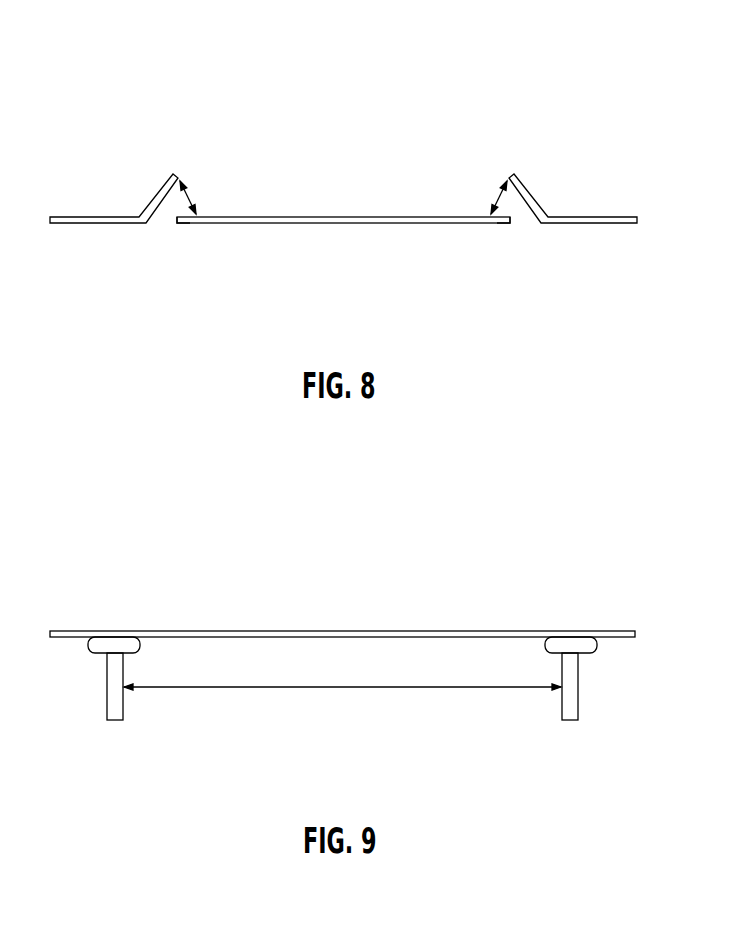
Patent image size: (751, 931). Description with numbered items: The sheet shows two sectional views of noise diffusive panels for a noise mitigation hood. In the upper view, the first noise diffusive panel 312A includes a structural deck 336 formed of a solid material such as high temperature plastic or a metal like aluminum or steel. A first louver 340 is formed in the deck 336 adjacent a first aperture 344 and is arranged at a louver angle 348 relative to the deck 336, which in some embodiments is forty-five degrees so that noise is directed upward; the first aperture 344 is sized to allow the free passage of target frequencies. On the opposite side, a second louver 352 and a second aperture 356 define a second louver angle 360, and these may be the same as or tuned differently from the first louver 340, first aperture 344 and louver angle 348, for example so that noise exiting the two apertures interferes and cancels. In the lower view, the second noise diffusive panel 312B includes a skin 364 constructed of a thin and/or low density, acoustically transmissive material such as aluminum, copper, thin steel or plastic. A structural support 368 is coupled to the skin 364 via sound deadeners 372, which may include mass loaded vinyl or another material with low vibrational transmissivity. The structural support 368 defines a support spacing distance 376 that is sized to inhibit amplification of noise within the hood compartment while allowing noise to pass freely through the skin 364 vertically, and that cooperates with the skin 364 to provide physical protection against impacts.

In FIG. 8, the first noise diffusive panel 312A is at (636, 95).
In FIG. 9, the second noise diffusive panel 312B is at (634, 569).
In FIG. 8, the structural deck 336 is at (343, 224).
In FIG. 8, the first louver 340 is at (153, 197).
In FIG. 8, the first aperture 344 is at (178, 225).
In FIG. 8, the louver angle 348 is at (192, 189).
In FIG. 8, the second louver 352 is at (531, 193).
In FIG. 8, the second aperture 356 is at (512, 225).
In FIG. 8, the second louver angle 360 is at (496, 190).
In FIG. 9, the skin 364 is at (343, 630).
In FIG. 9, the structural support 368 is at (124, 700).
In FIG. 9, the sound deadener 372 is at (98, 653).
In FIG. 9, the support spacing distance 376 is at (343, 688).